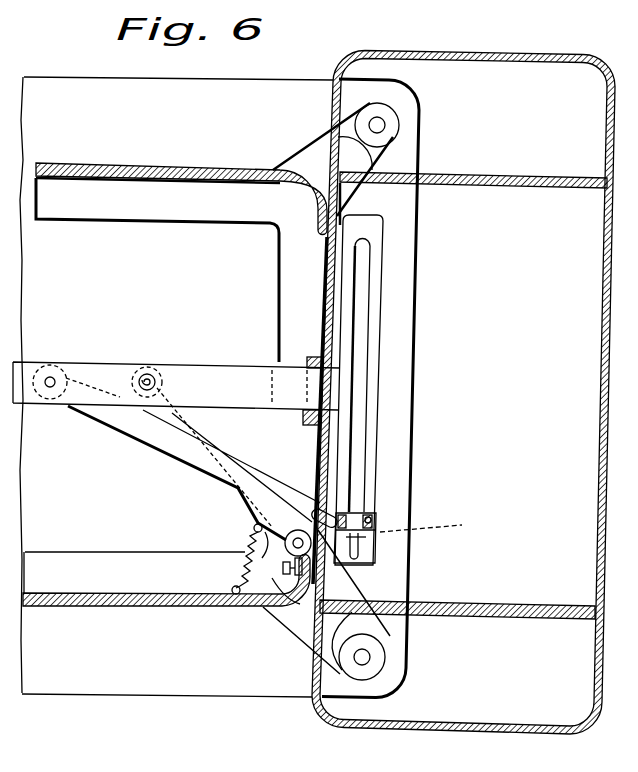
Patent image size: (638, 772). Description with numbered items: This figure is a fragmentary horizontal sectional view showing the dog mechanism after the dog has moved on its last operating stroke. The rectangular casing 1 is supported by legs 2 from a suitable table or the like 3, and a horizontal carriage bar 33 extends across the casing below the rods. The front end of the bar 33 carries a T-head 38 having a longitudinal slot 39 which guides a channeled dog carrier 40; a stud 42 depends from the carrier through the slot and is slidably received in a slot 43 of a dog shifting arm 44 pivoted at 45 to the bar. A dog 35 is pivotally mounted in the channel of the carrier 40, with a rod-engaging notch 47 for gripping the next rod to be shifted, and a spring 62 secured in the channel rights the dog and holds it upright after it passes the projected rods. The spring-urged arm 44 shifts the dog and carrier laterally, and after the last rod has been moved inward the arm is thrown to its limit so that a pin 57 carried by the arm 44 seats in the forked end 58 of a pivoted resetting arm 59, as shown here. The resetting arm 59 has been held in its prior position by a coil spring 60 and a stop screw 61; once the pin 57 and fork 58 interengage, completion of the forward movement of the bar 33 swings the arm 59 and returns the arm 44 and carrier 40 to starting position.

The casing 1 is at (143, 176).
The legs 2 is at (315, 160).
The table 3 is at (84, 84).
The carriage bar 33 is at (196, 378).
The dog 35 is at (378, 520).
The T-head 38 is at (372, 340).
The longitudinal slot 39 is at (358, 455).
The dog carrier 40 is at (365, 551).
The stud 42 is at (416, 527).
The slot 43 is at (330, 510).
The dog shifting arm 44 is at (158, 448).
The pivot 45 is at (50, 390).
The rod-engaging notch 47 is at (370, 516).
The pin 57 is at (150, 367).
The forked end 58 is at (125, 366).
The resetting arm 59 is at (200, 435).
The coil spring 60 is at (246, 550).
The stop screw 61 is at (268, 603).
The spring 62 is at (347, 560).